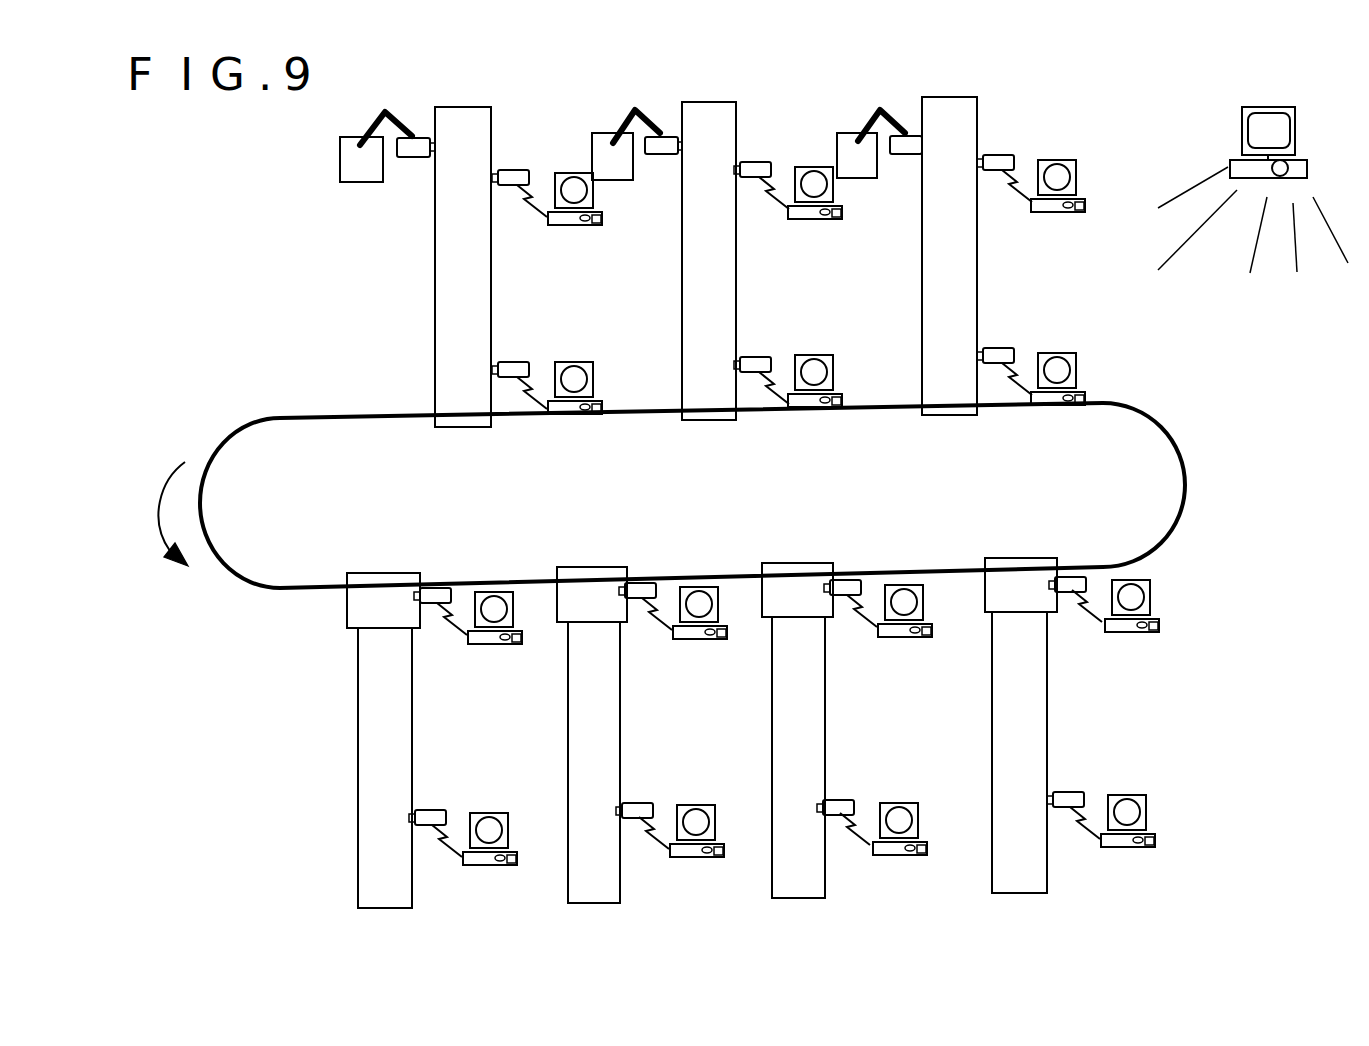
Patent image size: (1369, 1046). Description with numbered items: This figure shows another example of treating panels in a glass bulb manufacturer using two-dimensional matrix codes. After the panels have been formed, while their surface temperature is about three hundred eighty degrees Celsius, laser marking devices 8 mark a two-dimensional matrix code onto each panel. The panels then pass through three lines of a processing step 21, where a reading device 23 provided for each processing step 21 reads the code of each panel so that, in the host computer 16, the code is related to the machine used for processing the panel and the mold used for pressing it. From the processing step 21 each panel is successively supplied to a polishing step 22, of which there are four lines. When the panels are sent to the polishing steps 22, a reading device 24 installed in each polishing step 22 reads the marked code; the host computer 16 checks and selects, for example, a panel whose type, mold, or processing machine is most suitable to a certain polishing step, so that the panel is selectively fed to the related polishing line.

The laser marking device 8 is at (322, 199).
The host computer 16 is at (1253, 293).
The processing step 21 is at (380, 267).
The polishing step 22 is at (309, 740).
The reading device 23 is at (602, 261).
The reading device 24 is at (514, 688).